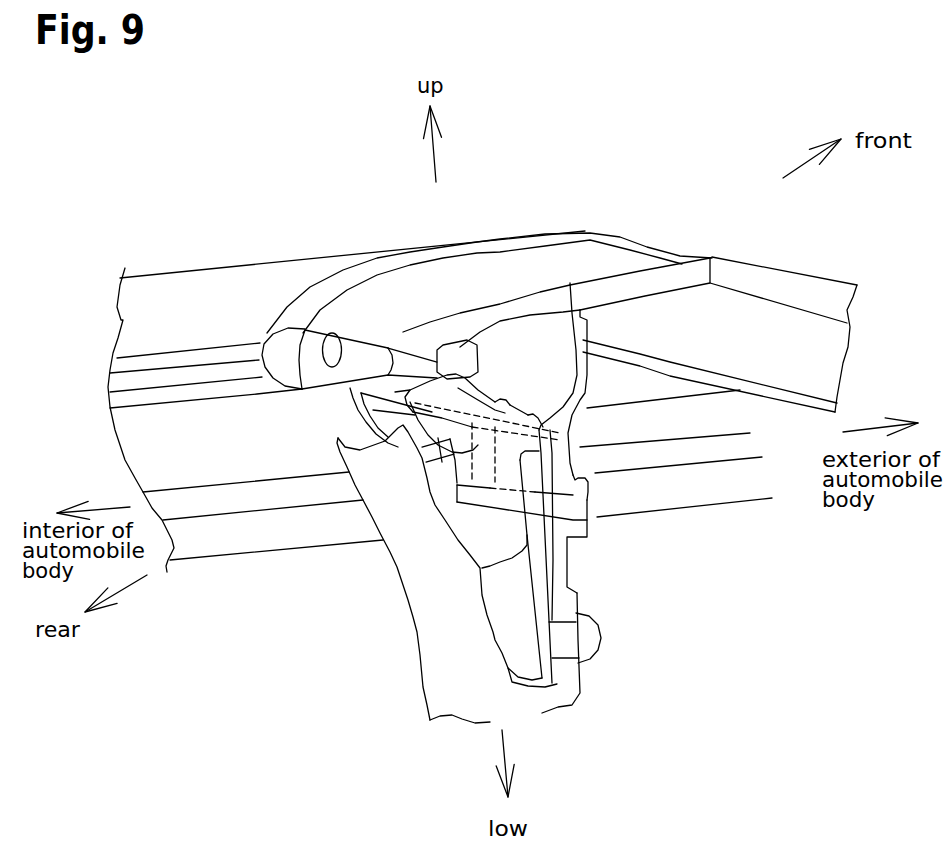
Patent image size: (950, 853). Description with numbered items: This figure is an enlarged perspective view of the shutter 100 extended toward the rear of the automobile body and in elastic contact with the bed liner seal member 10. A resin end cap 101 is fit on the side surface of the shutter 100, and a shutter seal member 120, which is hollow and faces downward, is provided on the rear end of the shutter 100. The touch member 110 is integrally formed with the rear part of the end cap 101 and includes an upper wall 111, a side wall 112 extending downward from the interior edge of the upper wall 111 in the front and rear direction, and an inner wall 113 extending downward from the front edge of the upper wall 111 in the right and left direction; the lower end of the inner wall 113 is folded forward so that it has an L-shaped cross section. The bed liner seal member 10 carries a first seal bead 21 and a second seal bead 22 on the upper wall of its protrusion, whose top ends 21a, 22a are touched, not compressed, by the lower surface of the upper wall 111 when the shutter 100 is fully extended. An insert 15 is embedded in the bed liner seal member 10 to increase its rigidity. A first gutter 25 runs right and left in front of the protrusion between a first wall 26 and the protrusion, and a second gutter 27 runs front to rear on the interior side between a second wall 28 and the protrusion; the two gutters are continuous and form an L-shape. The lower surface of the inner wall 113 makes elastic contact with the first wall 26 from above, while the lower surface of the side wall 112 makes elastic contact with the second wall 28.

The bed liner seal member 10 is at (458, 574).
The insert 15 is at (596, 582).
The first seal bead 21 is at (586, 483).
The top end of the first seal bead 21a is at (550, 385).
The second seal bead 22 is at (477, 395).
The top end of the second seal bead 22a is at (503, 368).
The first gutter 25 is at (630, 546).
The first wall 26 is at (641, 512).
The second gutter 27 is at (476, 538).
The second wall 28 is at (443, 571).
The shutter 100 is at (346, 375).
The end cap 101 is at (489, 243).
The touch member 110 is at (713, 352).
The upper wall 111 is at (484, 279).
The side wall 112 is at (339, 542).
The inner wall 113 is at (686, 472).
The shutter seal member 120 is at (263, 530).